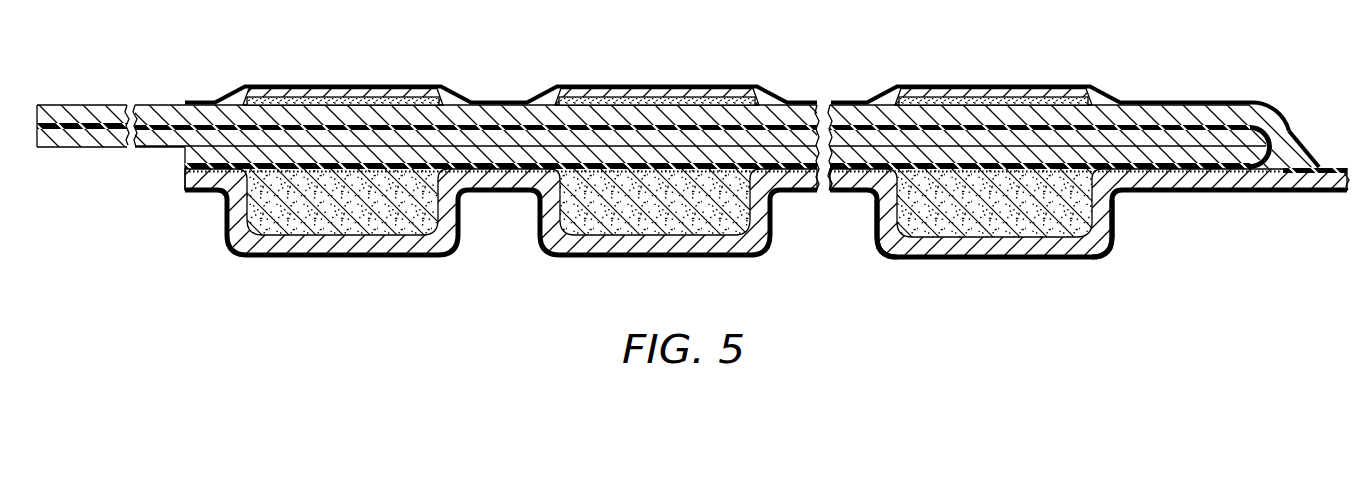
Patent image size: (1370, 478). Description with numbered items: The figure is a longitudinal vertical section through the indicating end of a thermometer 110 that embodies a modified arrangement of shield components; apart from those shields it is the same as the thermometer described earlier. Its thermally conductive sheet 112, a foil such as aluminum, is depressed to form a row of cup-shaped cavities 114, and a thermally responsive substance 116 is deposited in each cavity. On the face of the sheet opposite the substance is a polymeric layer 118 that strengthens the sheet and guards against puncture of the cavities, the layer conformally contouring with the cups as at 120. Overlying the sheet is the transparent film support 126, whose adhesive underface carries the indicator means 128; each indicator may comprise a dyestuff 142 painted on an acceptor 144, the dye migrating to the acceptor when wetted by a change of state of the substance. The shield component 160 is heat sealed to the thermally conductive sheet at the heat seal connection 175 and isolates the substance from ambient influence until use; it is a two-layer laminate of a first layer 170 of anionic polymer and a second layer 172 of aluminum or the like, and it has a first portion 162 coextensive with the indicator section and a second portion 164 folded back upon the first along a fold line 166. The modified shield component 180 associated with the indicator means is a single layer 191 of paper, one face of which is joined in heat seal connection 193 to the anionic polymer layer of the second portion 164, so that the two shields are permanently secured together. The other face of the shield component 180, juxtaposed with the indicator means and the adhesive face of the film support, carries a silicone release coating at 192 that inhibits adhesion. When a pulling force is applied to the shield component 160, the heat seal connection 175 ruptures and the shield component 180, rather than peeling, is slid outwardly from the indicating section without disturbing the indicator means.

The thermometer 110 is at (852, 80).
The thermally conductive sheet 112 is at (1287, 182).
The cup-shaped cavities 114 is at (752, 220).
The thermally responsive substance 116 is at (309, 215).
The layer 118 is at (1100, 248).
The conformal contour of layer 120 is at (888, 252).
The film support 126 is at (1283, 130).
The indicator means 128 is at (1105, 101).
The dyestuff 142 is at (372, 100).
The acceptor 144 is at (308, 90).
The shield component 160 is at (98, 156).
The first portion 162 is at (193, 152).
The second portion 164 is at (1262, 143).
The fold line 166 is at (1300, 138).
The first layer 170 is at (921, 158).
The second layer 172 is at (246, 134).
The heat seal connection 175 is at (202, 170).
The shield component 180 is at (110, 96).
The single layer 191 is at (478, 120).
The release coating 192 is at (549, 100).
The heat seal connection 193 is at (775, 125).